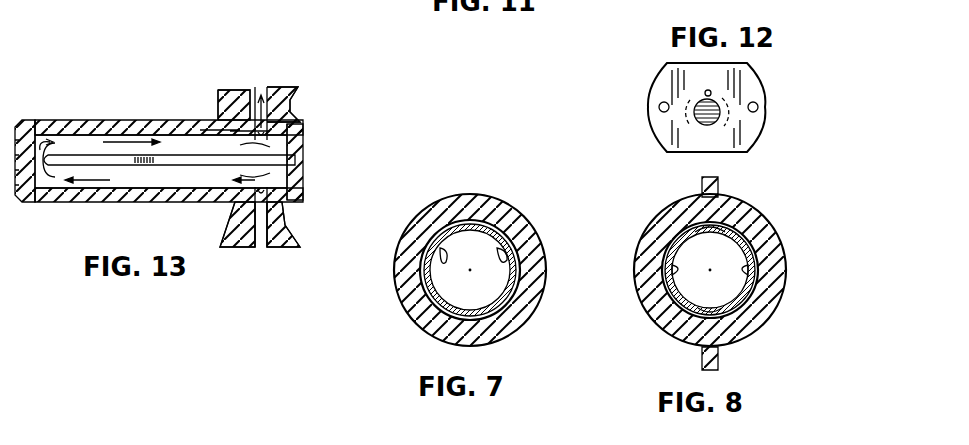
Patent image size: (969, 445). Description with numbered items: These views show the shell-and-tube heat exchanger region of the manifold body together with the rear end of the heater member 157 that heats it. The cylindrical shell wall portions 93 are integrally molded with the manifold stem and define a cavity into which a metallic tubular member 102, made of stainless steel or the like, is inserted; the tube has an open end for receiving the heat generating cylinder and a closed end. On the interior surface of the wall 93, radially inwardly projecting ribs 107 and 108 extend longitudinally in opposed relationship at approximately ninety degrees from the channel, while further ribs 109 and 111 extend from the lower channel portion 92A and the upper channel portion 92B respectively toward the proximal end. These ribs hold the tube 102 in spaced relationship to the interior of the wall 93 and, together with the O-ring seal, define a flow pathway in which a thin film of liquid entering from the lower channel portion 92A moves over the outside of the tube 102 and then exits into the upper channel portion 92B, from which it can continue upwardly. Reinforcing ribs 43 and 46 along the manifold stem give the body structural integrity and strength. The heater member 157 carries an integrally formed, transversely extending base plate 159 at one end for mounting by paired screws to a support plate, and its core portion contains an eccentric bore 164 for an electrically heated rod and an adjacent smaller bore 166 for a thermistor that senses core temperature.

In FIG. 13, the cylindrical shell wall portions 93 is at (83, 120).
In FIG. 7, the cylindrical shell wall portions 93 is at (412, 318).
In FIG. 8, the cylindrical shell wall portions 93 is at (770, 222).
In FIG. 13, the radially inwardly projecting rib 108 is at (180, 155).
In FIG. 7, the radially inwardly projecting rib 108 is at (447, 250).
In FIG. 8, the radially inwardly projecting rib 108 is at (670, 278).
In FIG. 13, the rib 111 is at (275, 125).
In FIG. 8, the rib 111 is at (673, 228).
In FIG. 13, the rib 109 is at (280, 160).
In FIG. 8, the rib 109 is at (688, 322).
In FIG. 13, the upper portion of channel 92B is at (262, 90).
In FIG. 13, the lower portion of channel 92A is at (259, 248).
In FIG. 13, the reinforcing rib 43 is at (297, 95).
In FIG. 8, the reinforcing rib 43 is at (720, 185).
In FIG. 13, the reinforcing rib 46 is at (298, 235).
In FIG. 8, the reinforcing rib 46 is at (720, 360).
In FIG. 7, the metallic tubular member 102 is at (488, 225).
In FIG. 8, the metallic tubular member 102 is at (758, 265).
In FIG. 7, the radially inwardly projecting rib 107 is at (510, 255).
In FIG. 8, the radially inwardly projecting rib 107 is at (752, 275).
In FIG. 12, the heater member 157 is at (645, 66).
In FIG. 12, the base plate 159 is at (765, 140).
In FIG. 12, the eccentric bore 164 is at (715, 118).
In FIG. 12, the smaller bore 166 is at (710, 93).